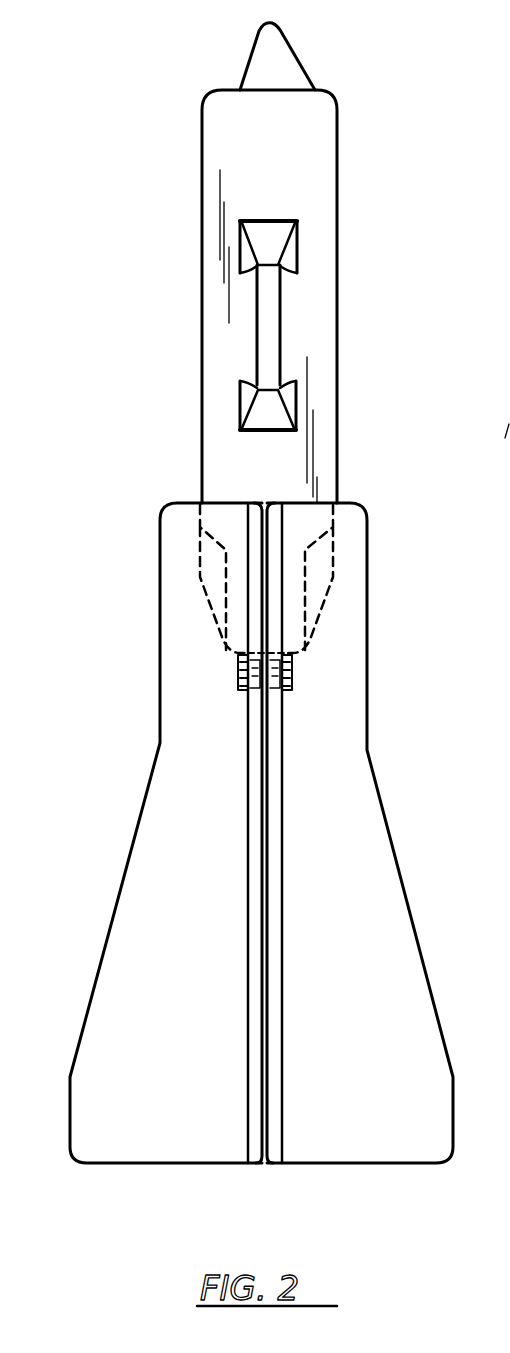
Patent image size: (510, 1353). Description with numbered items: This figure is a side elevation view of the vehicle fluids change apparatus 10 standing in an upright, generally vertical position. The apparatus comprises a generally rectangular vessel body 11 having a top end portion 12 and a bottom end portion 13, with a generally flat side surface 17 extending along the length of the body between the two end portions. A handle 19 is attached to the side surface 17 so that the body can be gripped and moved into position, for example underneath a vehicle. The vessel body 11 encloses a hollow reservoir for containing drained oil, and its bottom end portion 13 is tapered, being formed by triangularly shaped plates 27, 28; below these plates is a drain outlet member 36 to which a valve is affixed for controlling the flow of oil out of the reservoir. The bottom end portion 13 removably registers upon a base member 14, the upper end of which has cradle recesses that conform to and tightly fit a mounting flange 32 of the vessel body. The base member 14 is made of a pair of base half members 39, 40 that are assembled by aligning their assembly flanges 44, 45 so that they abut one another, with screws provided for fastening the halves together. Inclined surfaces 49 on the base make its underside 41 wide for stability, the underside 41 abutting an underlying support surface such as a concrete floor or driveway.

The vehicle fluids change apparatus 10 is at (176, 64).
The top end portion 12 is at (317, 90).
The side surface 17 is at (315, 153).
The vessel body 11 is at (232, 228).
The handle 19 is at (270, 315).
The base member 14 is at (362, 802).
The base half member 39 is at (210, 833).
The base half member 40 is at (323, 833).
The assembly flange 44 is at (257, 945).
The assembly flange 45 is at (267, 935).
The mounting flange 32 is at (220, 570).
The triangularly shaped plate 27 is at (317, 595).
The triangularly shaped plate 28 is at (217, 615).
The bottom end portion 13 is at (297, 653).
The drain outlet member 36 is at (242, 668).
The inclined surface 49 is at (112, 918).
The underside 41 is at (172, 1166).